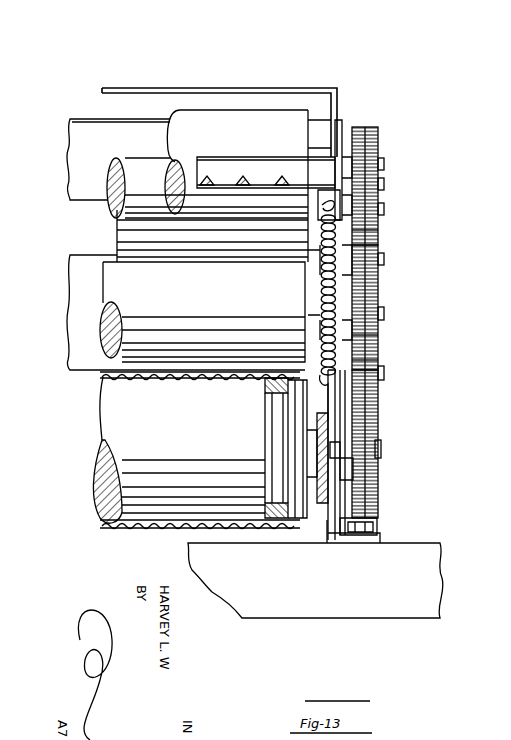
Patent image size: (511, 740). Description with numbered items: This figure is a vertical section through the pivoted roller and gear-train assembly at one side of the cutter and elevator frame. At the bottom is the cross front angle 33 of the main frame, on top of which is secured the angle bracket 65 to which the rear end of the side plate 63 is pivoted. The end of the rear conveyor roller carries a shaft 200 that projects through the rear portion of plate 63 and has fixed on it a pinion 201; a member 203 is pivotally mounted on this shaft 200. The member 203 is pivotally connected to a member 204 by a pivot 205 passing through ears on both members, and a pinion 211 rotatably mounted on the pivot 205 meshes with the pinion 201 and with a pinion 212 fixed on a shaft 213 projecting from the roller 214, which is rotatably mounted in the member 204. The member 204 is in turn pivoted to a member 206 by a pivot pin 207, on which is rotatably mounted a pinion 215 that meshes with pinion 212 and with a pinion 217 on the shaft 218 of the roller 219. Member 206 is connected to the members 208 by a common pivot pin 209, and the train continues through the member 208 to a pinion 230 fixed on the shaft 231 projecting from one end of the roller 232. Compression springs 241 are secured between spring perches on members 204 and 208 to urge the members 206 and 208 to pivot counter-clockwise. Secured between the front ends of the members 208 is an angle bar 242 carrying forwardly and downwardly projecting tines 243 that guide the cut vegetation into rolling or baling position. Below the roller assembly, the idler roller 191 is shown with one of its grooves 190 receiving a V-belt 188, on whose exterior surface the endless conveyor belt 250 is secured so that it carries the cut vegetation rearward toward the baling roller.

The member 208 is at (162, 90).
The member 206 is at (85, 132).
The roller 219 is at (207, 209).
The roller 232 is at (236, 162).
The angle bar 242 is at (266, 168).
The tines 243 is at (243, 176).
The compression springs 241 is at (320, 284).
The member 204 is at (78, 263).
The roller 214 is at (202, 312).
The endless conveyor belt 250 is at (193, 377).
The roller 191 is at (105, 438).
The V-belt 188 is at (265, 385).
The grooves 190 is at (275, 430).
The member 203 is at (333, 393).
The plate 63 is at (320, 507).
The pinion 230 is at (378, 130).
The pinion 215 is at (378, 277).
The pinion 201 is at (375, 425).
The pinion 217 is at (378, 235).
The pinion 212 is at (378, 335).
The pinion 211 is at (378, 360).
The shaft 231 is at (384, 163).
The pivot pin 209 is at (384, 183).
The shaft 218 is at (384, 210).
The pivot pin 207 is at (384, 258).
The shaft 213 is at (384, 315).
The pivot 205 is at (384, 374).
The shaft 200 is at (381, 450).
The angle bracket 65 is at (377, 535).
The cross front angle 33 is at (427, 585).